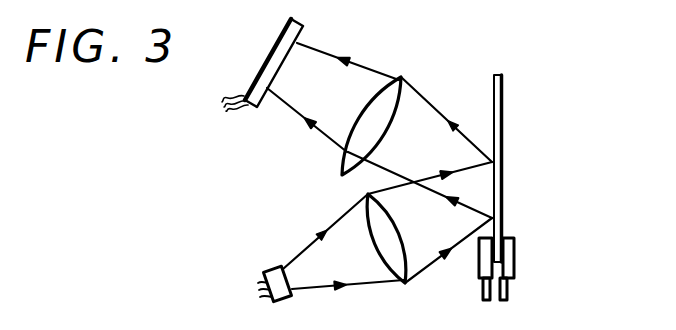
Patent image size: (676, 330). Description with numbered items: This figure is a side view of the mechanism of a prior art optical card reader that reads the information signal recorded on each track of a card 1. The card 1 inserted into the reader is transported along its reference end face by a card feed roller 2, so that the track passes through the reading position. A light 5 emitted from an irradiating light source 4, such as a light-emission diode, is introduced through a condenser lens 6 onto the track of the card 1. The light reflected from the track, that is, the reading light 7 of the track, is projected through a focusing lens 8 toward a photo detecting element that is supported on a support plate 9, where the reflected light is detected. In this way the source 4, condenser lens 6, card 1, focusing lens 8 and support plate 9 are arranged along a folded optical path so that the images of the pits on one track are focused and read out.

The card 1 is at (503, 100).
The card feed roller 2 is at (479, 263).
The irradiating light source 4 is at (268, 273).
The light 5 is at (315, 242).
The condenser lens 6 is at (366, 197).
The reading light 7 is at (434, 108).
The focusing lens 8 is at (399, 78).
The support plate 9 is at (250, 108).